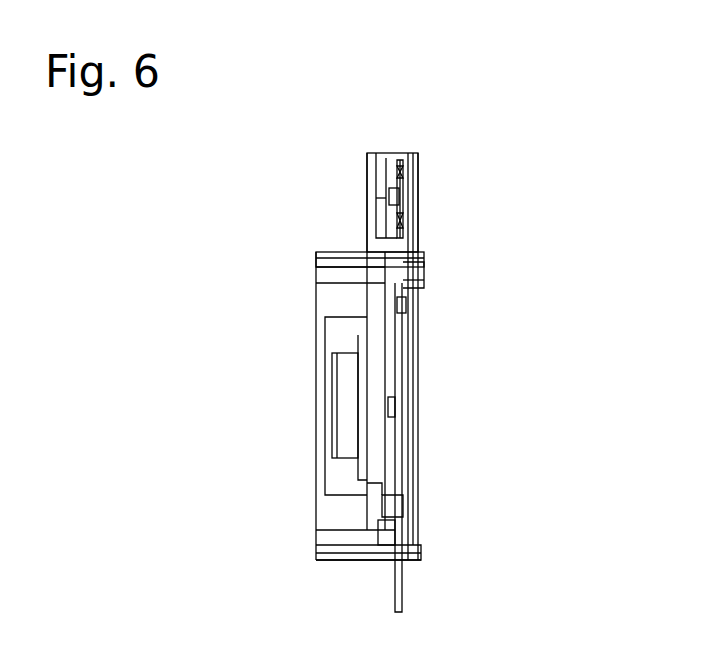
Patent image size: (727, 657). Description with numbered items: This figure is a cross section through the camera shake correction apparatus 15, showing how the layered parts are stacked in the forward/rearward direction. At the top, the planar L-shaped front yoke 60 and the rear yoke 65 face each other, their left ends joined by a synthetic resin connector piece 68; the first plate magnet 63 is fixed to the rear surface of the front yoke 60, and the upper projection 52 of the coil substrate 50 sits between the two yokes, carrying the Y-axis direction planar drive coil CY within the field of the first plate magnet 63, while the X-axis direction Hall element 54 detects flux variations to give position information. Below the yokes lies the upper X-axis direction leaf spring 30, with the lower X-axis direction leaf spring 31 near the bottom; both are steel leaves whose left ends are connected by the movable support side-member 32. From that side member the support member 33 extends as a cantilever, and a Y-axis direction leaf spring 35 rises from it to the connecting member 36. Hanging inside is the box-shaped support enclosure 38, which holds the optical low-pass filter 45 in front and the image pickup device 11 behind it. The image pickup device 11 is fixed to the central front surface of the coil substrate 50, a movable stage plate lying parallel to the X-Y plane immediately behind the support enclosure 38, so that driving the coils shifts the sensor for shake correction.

The camera shake correction apparatus 15 is at (332, 198).
The front yoke 60 is at (376, 203).
The first plate magnet 63 is at (386, 178).
The X-axis direction Hall element 54 is at (397, 168).
The Y-axis direction planar drive coil CY is at (401, 178).
The connector piece 68 is at (410, 172).
The upper projection 52 is at (399, 198).
The rear yoke 65 is at (411, 236).
The upper X-axis direction leaf spring 30 is at (322, 253).
The connecting member 36 is at (330, 274).
The support enclosure 38 is at (340, 332).
The optical low-pass filter 45 is at (345, 406).
The image pickup device 11 is at (361, 386).
The coil substrate 50 is at (400, 354).
The Y-axis direction leaf spring 35 is at (332, 509).
The movable support side-member 32 is at (325, 553).
The lower X-axis direction leaf spring 31 is at (330, 562).
The support member 33 is at (348, 542).